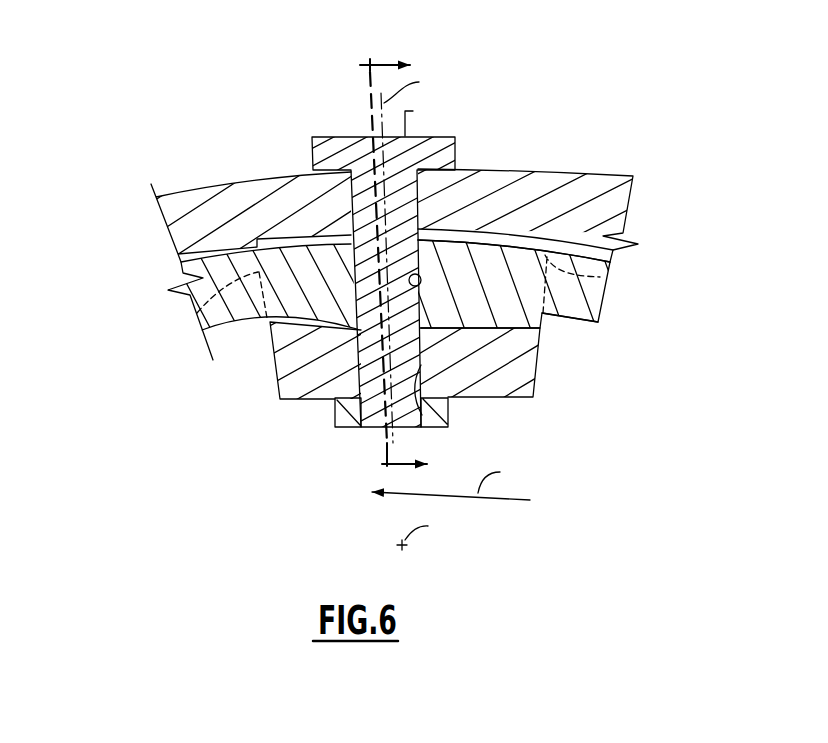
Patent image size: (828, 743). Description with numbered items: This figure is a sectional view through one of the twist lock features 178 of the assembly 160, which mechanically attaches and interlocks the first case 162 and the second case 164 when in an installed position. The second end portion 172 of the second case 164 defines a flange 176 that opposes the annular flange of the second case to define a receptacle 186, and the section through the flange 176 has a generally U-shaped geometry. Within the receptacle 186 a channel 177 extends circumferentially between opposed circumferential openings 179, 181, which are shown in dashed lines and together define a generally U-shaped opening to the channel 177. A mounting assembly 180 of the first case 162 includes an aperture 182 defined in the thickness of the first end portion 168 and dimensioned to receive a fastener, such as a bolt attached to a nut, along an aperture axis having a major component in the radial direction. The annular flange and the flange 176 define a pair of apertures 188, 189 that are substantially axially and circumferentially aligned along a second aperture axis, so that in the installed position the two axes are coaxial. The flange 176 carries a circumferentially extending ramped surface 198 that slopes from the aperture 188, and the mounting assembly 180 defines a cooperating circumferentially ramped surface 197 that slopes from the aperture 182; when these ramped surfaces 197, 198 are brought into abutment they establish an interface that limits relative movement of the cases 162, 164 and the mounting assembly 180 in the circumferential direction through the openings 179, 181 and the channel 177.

The assembly 160 is at (199, 86).
The second case 164 is at (302, 342).
The second end portion 172 is at (284, 200).
The twist lock feature 178 is at (452, 318).
The channel 177 is at (514, 232).
The aperture 189 is at (411, 167).
The aperture 182 is at (421, 280).
The circumferential opening 179 is at (600, 277).
The circumferential opening 181 is at (197, 313).
The first case 162 is at (222, 325).
The first end portion 168 is at (242, 312).
The receptacle 186 is at (563, 329).
The mounting assembly 180 is at (552, 338).
The flange 176 is at (322, 399).
The aperture 188 is at (447, 416).
The circumferentially ramped surface 197 is at (284, 406).
The circumferentially extending ramped surface 198 is at (325, 320).